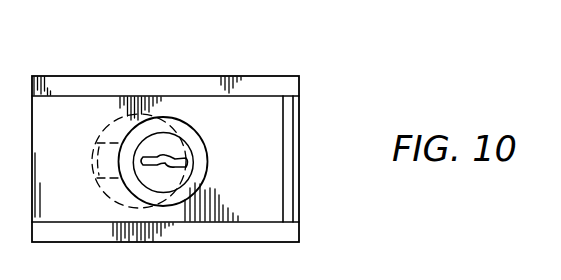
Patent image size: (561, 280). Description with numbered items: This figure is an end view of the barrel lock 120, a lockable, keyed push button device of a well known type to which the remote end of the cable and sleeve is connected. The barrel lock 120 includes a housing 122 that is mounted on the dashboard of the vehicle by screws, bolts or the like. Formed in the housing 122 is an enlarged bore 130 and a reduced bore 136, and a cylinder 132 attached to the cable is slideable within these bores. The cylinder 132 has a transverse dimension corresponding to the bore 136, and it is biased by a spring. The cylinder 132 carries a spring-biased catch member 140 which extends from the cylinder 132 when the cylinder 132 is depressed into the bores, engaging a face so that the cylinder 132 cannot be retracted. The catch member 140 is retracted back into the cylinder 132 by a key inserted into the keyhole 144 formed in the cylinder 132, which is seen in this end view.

The barrel lock 120 is at (337, 62).
The housing 122 is at (280, 194).
The enlarged bore 130 is at (111, 188).
The cylinder 132 is at (177, 178).
The bore 136 is at (204, 154).
The catch member 140 is at (106, 129).
The keyhole 144 is at (173, 157).